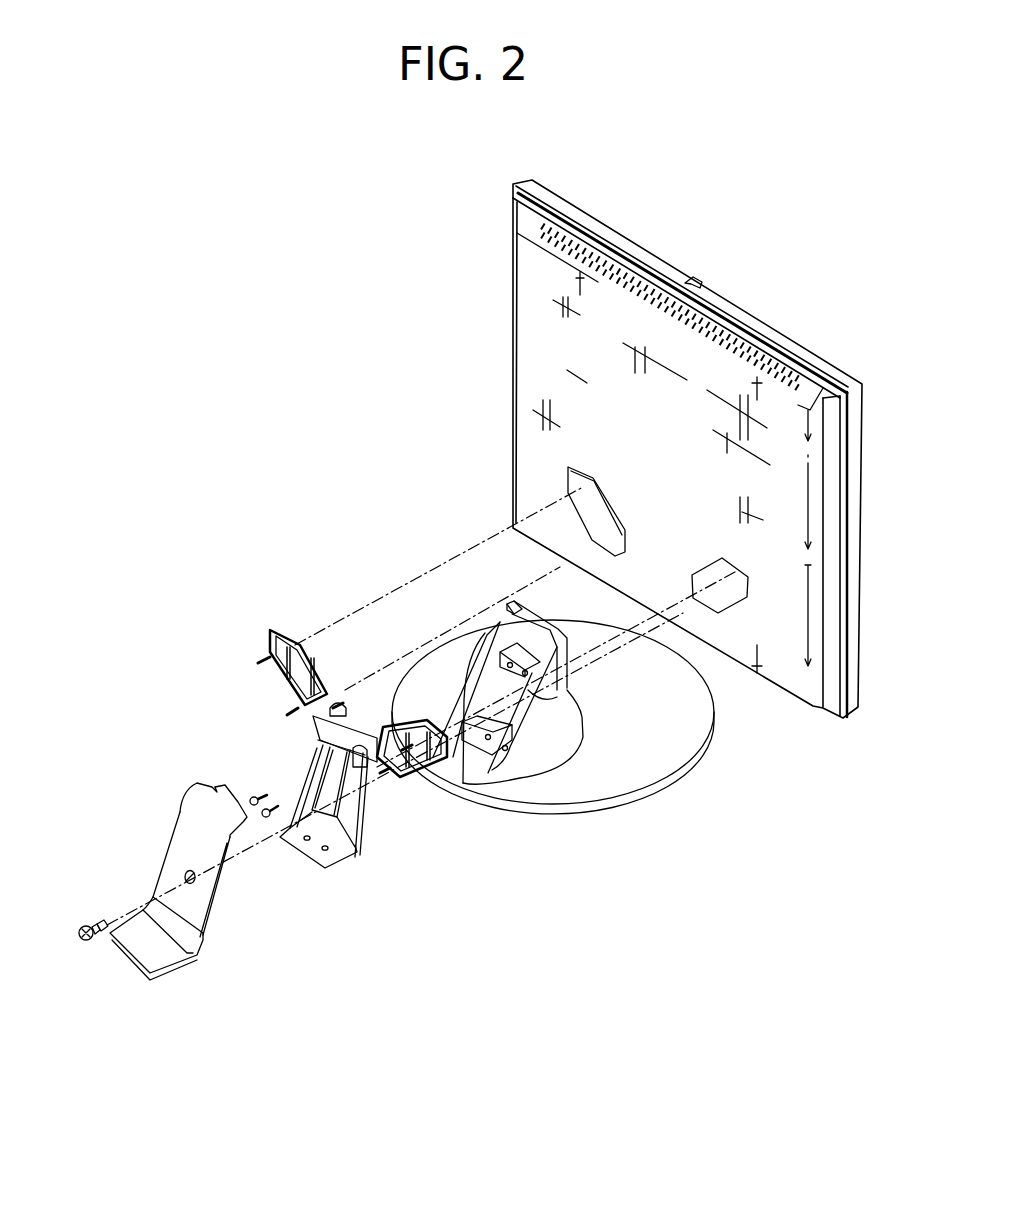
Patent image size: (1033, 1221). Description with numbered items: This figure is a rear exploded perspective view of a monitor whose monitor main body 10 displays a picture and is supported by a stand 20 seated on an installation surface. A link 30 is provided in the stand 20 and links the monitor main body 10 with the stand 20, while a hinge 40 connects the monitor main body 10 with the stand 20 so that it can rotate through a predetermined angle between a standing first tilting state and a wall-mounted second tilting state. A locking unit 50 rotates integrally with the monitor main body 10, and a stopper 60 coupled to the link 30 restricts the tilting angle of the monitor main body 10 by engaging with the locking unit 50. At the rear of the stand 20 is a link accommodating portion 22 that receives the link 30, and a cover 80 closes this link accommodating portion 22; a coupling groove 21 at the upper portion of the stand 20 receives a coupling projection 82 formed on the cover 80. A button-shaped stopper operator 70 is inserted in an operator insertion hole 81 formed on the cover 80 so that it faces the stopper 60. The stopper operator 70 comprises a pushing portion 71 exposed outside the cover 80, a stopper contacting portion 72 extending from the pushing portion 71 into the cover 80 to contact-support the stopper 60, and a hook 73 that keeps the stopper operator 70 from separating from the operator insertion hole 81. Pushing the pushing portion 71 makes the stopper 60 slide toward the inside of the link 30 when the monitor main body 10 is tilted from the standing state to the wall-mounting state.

The monitor main body 10 is at (730, 331).
The stand 20 is at (559, 788).
The coupling groove 21 is at (543, 622).
The link accommodating portion 22 is at (507, 725).
The link 30 is at (350, 830).
The hinge 40 is at (344, 702).
The locking unit 50 is at (374, 765).
The stopper 60 is at (322, 818).
The stopper operator 70 is at (89, 990).
The pushing portion 71 is at (75, 938).
The stopper contacting portion 72 is at (106, 930).
The hook 73 is at (97, 938).
The cover 80 is at (191, 864).
The operator insertion hole 81 is at (195, 883).
The coupling projection 82 is at (240, 800).